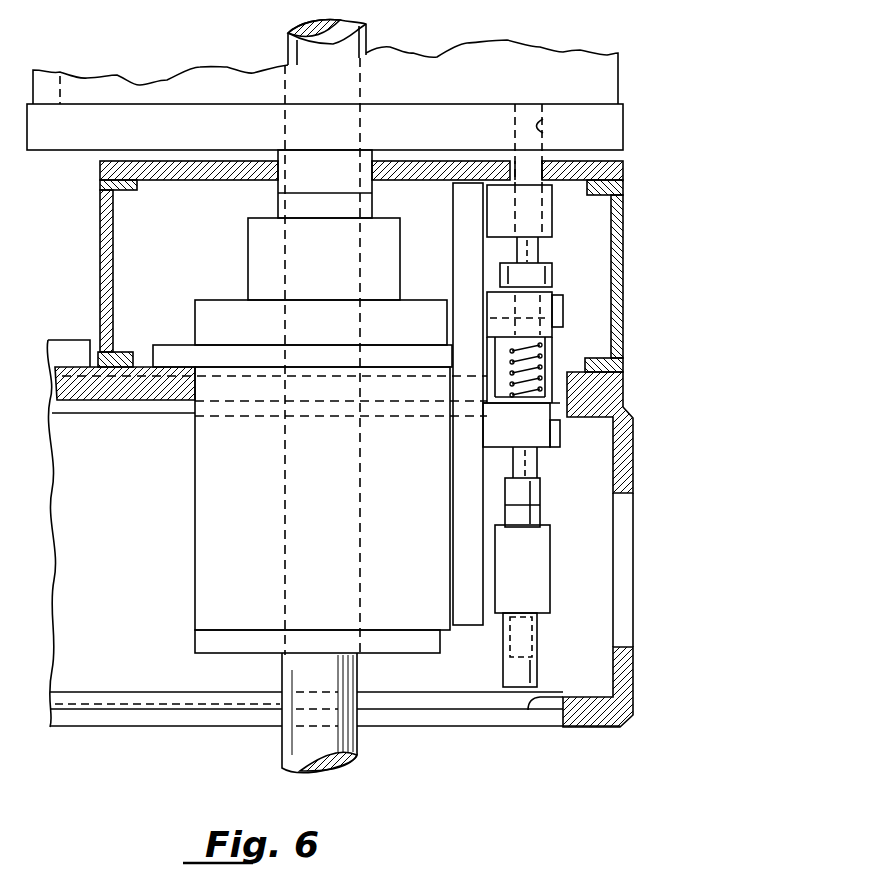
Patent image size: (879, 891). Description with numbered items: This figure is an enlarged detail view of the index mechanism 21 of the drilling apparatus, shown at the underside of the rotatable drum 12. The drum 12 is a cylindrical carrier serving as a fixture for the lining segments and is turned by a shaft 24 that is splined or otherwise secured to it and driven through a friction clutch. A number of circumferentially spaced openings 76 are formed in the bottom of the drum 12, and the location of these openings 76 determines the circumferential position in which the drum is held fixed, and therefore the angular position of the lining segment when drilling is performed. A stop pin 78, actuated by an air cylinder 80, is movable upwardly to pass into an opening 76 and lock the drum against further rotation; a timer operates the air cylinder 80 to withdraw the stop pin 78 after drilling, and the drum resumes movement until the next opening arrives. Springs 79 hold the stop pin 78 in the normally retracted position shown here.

The rotatable drum 12 is at (613, 137).
The opening 76 is at (540, 112).
The stop pin 78 is at (530, 250).
The index mechanism 21 is at (533, 278).
The air cylinder 80 is at (555, 345).
The springs 79 is at (540, 363).
The shaft 24 is at (330, 742).